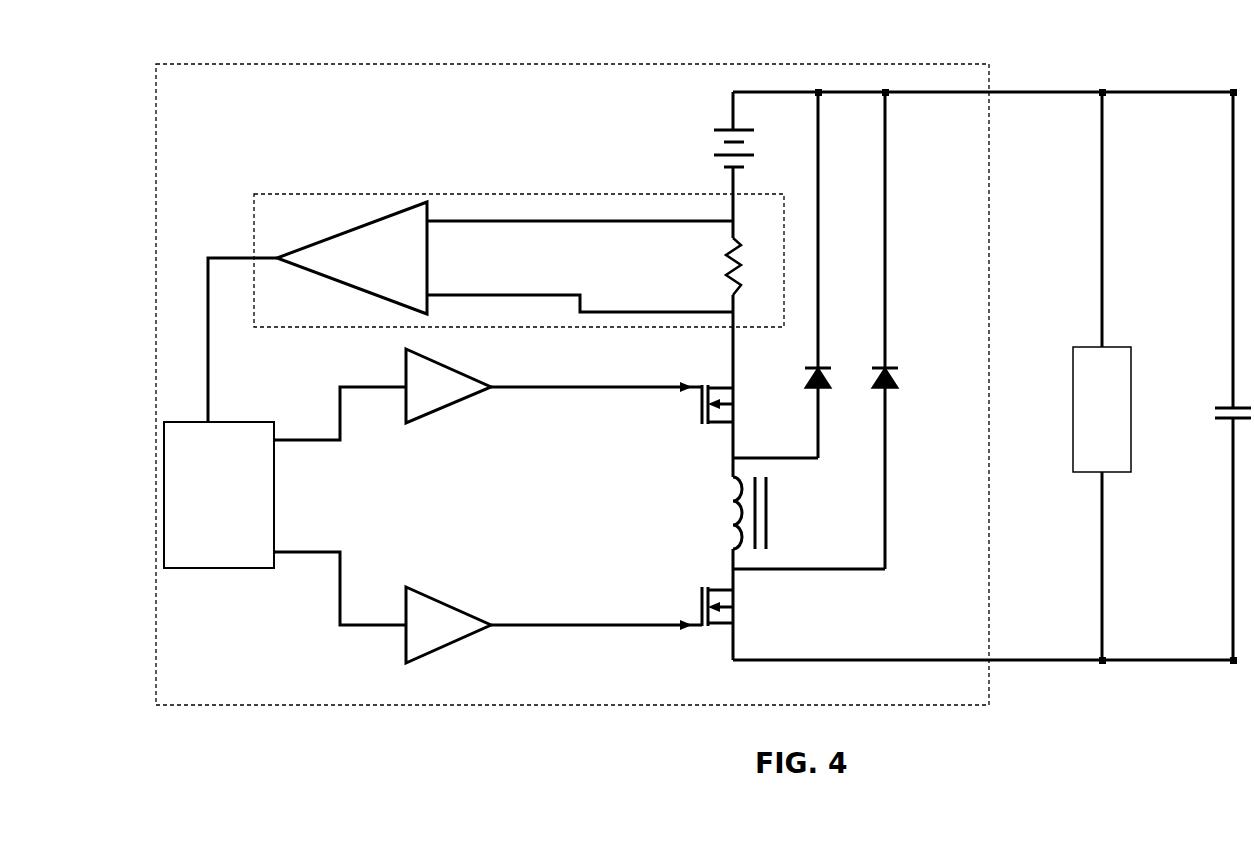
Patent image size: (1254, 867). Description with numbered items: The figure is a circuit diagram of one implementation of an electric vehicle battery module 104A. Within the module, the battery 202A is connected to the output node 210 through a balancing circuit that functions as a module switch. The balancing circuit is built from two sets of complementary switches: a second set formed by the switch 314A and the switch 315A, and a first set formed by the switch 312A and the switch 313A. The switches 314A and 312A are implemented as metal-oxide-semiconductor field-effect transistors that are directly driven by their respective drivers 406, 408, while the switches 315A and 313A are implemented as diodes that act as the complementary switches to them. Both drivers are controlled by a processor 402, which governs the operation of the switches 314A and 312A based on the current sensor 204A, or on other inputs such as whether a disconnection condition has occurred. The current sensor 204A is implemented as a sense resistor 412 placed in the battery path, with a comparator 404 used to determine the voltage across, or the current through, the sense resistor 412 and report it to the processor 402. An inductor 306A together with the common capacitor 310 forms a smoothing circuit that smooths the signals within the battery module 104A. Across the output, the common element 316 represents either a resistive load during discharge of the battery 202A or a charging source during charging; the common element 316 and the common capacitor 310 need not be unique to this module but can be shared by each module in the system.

The electric vehicle battery module 104A is at (500, 705).
The current sensor 204A is at (556, 194).
The battery 202A is at (722, 122).
The output node 210 is at (955, 95).
The sense resistor 412 is at (725, 275).
The comparator 404 is at (505, 258).
The processor 402 is at (285, 441).
The driver 406 is at (554, 386).
The driver 408 is at (554, 625).
The switch 314A is at (722, 383).
The switch 312A is at (696, 588).
The inductor 306A is at (730, 517).
The switch 315A is at (805, 380).
The switch 313A is at (893, 392).
The common element 316 is at (1102, 376).
The common capacitor 310 is at (1224, 403).